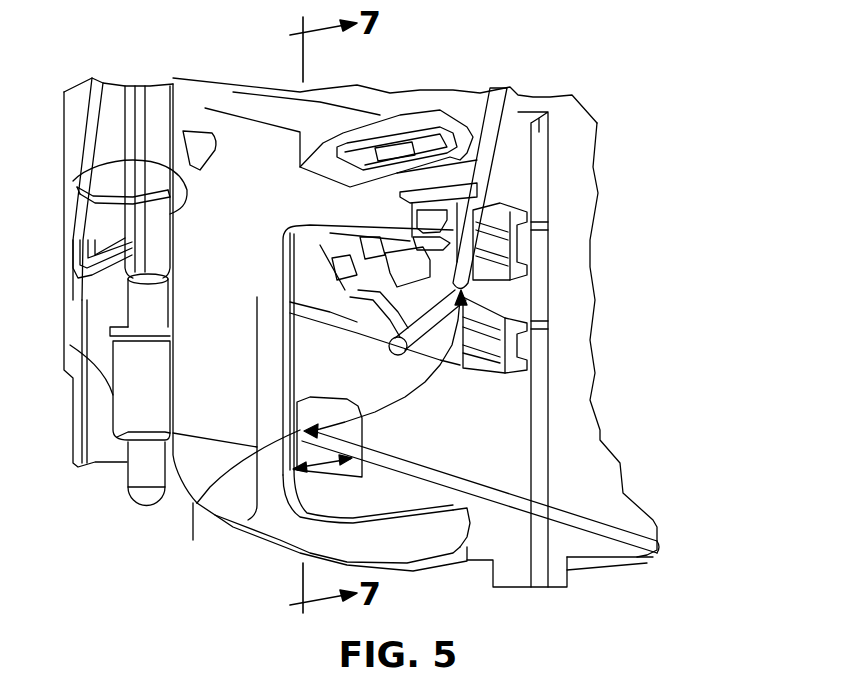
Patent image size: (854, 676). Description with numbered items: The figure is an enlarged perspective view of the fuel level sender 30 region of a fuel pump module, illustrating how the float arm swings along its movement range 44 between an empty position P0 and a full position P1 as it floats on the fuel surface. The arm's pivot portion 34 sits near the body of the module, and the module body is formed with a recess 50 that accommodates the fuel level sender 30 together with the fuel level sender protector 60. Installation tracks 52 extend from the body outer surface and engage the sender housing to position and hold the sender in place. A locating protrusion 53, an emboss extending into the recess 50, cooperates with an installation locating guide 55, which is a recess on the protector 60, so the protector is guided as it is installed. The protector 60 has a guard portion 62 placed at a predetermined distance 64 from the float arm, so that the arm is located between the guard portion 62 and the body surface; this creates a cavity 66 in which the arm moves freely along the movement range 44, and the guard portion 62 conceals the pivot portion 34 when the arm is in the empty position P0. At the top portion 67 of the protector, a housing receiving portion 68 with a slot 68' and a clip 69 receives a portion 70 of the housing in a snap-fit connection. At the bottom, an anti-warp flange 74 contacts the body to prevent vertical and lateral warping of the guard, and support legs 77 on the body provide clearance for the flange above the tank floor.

The fuel level sender 30 is at (560, 163).
The pivot portion 34 is at (293, 287).
The movement range 44 is at (428, 395).
The recess 50 is at (183, 113).
The installation tracks 52 is at (548, 228).
The locating protrusion 53 is at (167, 228).
The installation locating guide 55 is at (107, 170).
The fuel level sender protector 60 is at (197, 290).
The guard portion 62 is at (198, 386).
The predetermined distance 64 is at (248, 517).
The cavity 66 is at (191, 533).
The top portion 67 is at (278, 117).
The housing receiving portion 68 is at (399, 136).
The slot 68' is at (397, 109).
The clip 69 is at (494, 112).
The portion of the housing 70 is at (390, 147).
The anti-warp flange 74 is at (493, 565).
The support legs 77 is at (560, 575).
The empty position P0 is at (657, 543).
The full position P1 is at (527, 92).